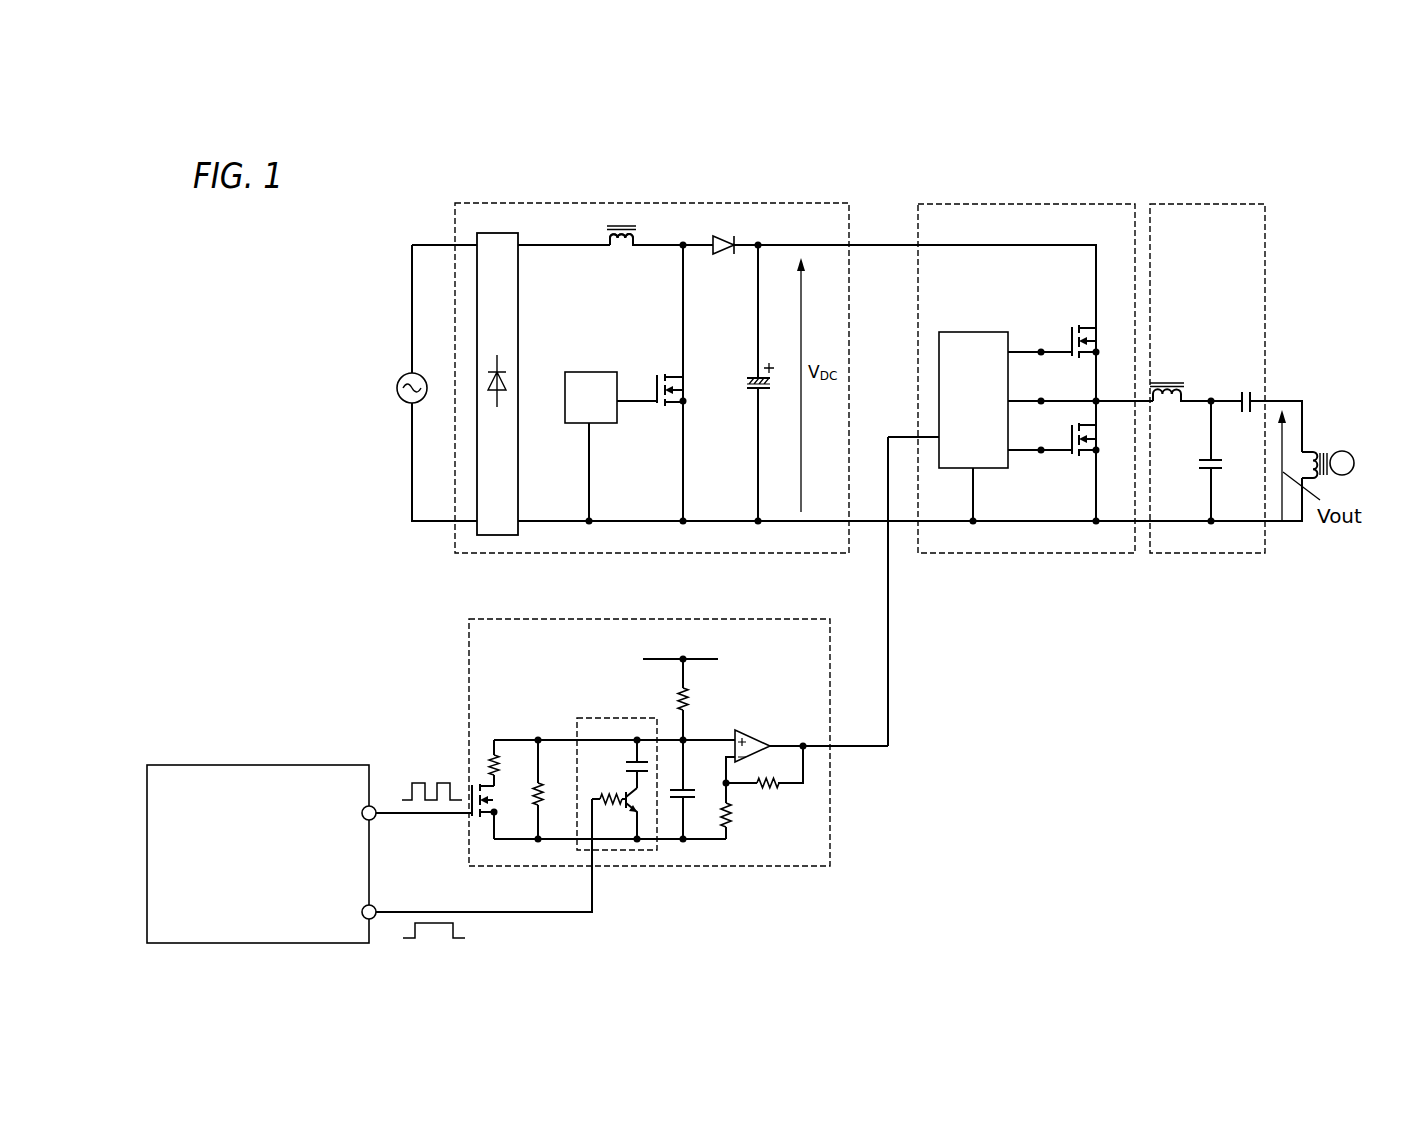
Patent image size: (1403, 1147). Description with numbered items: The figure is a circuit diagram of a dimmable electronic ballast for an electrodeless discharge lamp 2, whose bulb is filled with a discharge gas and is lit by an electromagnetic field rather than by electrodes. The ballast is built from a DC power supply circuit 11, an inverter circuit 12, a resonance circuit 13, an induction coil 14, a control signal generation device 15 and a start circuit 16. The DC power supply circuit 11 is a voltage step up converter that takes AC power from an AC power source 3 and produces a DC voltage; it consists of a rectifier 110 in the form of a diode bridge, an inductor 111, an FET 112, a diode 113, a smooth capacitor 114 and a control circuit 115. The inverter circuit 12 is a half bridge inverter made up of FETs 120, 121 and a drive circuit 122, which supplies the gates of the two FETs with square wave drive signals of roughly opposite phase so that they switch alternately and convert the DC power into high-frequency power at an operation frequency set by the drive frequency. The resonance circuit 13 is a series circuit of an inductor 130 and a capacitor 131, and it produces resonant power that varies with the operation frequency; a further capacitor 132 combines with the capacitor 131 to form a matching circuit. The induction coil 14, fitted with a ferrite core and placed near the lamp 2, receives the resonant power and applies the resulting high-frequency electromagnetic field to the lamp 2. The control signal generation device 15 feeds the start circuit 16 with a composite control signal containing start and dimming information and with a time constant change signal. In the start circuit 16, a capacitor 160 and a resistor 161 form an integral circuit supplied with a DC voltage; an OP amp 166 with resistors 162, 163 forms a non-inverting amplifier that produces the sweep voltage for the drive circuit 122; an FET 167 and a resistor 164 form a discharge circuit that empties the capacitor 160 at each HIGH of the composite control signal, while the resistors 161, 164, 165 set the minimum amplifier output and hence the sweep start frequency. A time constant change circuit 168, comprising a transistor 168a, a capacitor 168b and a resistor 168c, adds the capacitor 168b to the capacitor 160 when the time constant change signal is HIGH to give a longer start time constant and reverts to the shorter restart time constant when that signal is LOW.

The electrodeless discharge lamp 2 is at (1352, 472).
The AC power source 3 is at (400, 377).
The DC power supply circuit 11 is at (738, 203).
The rectifier 110 is at (515, 463).
The inductor 111 is at (622, 237).
The FET 112 is at (667, 372).
The diode 113 is at (718, 256).
The smooth capacitor 114 is at (752, 378).
The control circuit 115 is at (578, 373).
The inverter circuit 12 is at (1107, 206).
The FET 120 is at (1085, 330).
The FET 121 is at (1084, 455).
The drive circuit 122 is at (958, 332).
The resonance circuit 13 is at (1250, 206).
The inductor 130 is at (1166, 402).
The capacitor 131 is at (1217, 470).
The capacitor 132 is at (1240, 392).
The induction coil 14 is at (1315, 452).
The control signal generation device 15 is at (185, 768).
The start circuit 16 is at (488, 620).
The capacitor 160 is at (685, 798).
The resistor 161 is at (690, 700).
The resistor 162 is at (730, 810).
The resistor 163 is at (772, 790).
The resistor 164 is at (499, 757).
The resistor 165 is at (540, 802).
The OP amp 166 is at (753, 732).
The FET 167 is at (483, 792).
The time constant change circuit 168 is at (637, 788).
The transistor 168a is at (642, 805).
The capacitor 168b is at (633, 760).
The resistor 168c is at (610, 800).